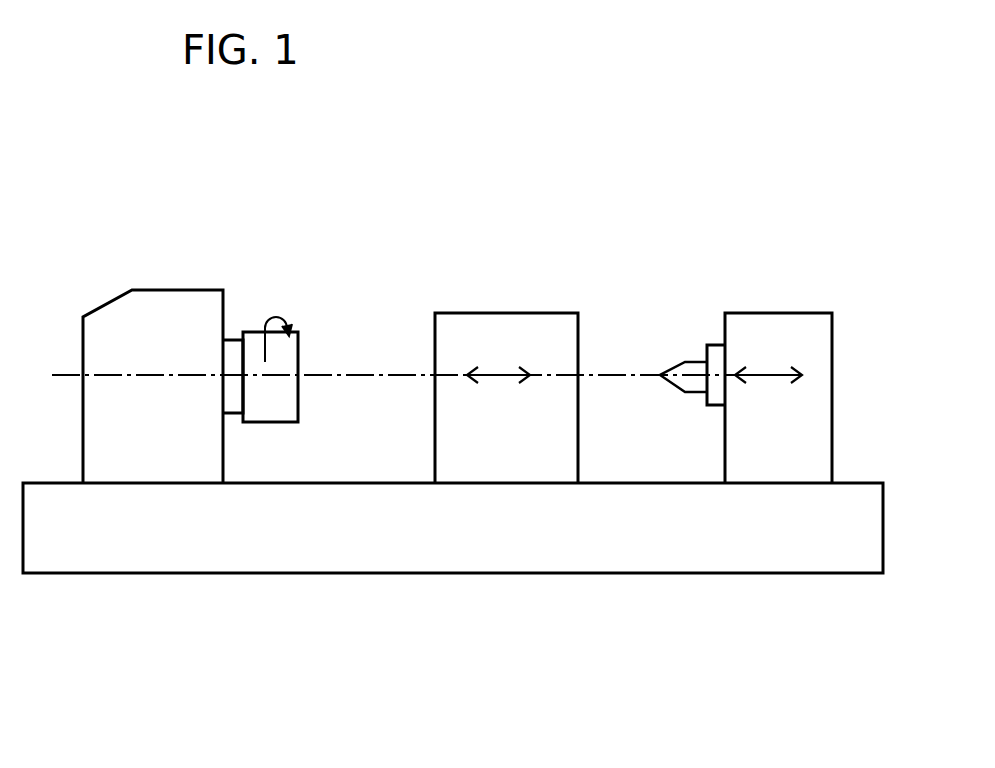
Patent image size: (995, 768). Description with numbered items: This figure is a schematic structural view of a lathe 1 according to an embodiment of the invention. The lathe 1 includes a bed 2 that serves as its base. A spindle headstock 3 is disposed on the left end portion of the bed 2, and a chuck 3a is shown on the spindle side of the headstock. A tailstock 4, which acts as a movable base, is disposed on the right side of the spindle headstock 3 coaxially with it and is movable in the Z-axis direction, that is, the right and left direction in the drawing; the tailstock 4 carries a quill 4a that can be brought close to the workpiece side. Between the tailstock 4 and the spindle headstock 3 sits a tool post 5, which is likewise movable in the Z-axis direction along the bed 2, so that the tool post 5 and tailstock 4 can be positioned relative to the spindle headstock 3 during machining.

The lathe 1 is at (483, 203).
The bed 2 is at (415, 558).
The spindle headstock 3 is at (110, 298).
The chuck 3a is at (298, 352).
The tailstock 4 is at (777, 312).
The quill 4a is at (688, 361).
The tool post 5 is at (520, 312).